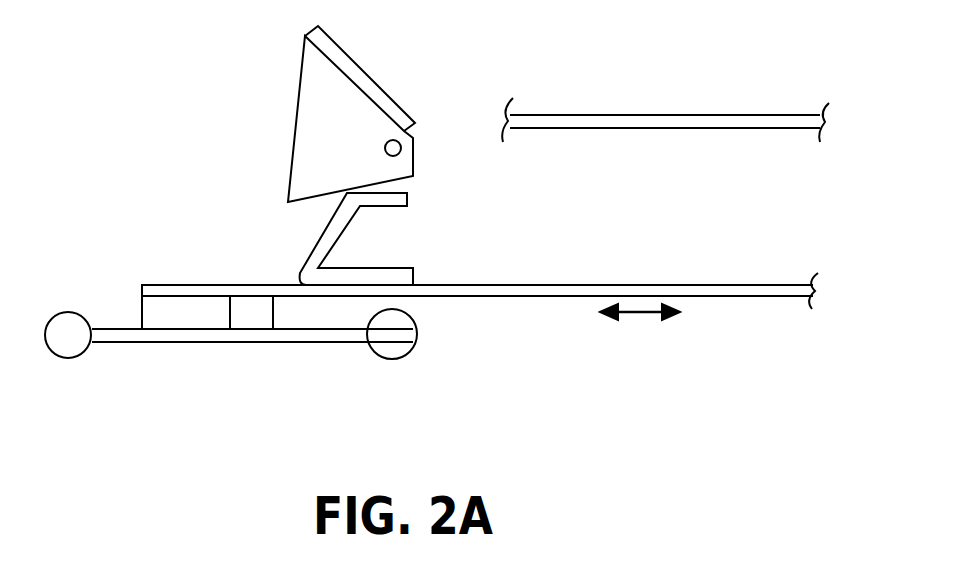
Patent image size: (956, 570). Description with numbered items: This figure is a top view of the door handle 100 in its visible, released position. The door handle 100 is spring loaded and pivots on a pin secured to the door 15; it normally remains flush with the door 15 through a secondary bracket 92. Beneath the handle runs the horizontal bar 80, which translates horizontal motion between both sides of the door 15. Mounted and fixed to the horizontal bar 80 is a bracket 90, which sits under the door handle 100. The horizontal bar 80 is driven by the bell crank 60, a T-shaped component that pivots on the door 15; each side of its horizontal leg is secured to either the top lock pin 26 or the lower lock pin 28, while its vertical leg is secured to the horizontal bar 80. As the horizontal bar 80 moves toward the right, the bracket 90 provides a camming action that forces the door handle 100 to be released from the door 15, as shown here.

The door 15 is at (600, 113).
The top lock pin 26 is at (58, 312).
The lower lock pin 28 is at (416, 346).
The bell crank 60 is at (338, 342).
The horizontal bar 80 is at (673, 282).
The bracket 90 is at (357, 210).
The secondary bracket 92 is at (337, 33).
The door handle 100 is at (317, 103).